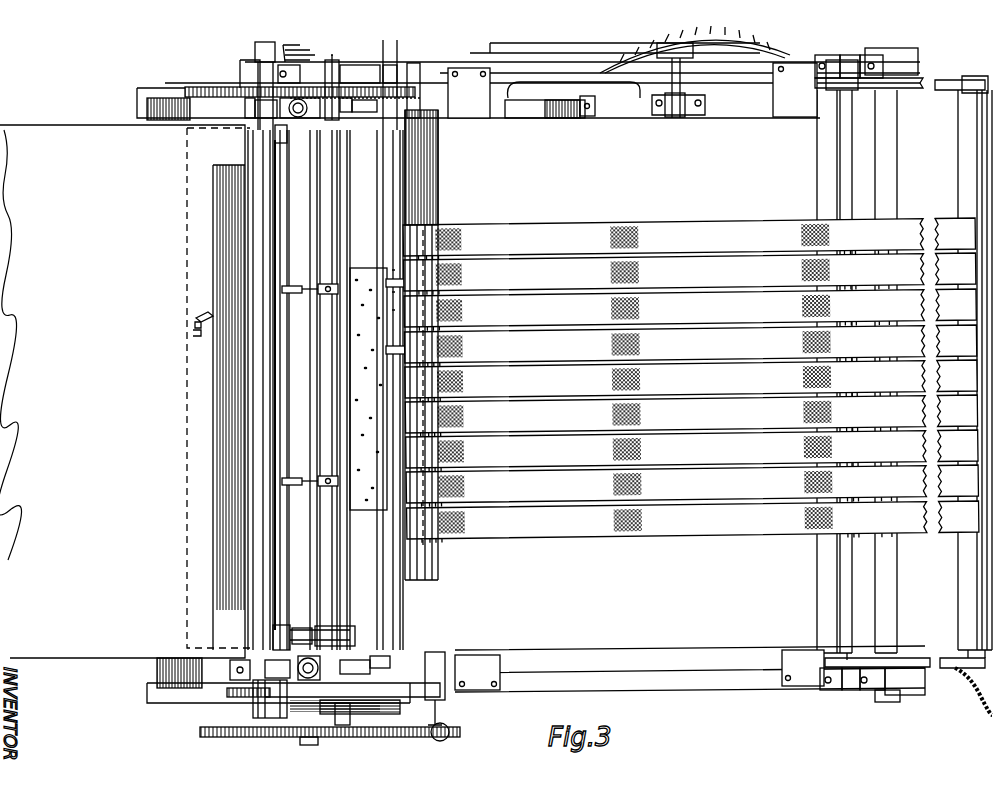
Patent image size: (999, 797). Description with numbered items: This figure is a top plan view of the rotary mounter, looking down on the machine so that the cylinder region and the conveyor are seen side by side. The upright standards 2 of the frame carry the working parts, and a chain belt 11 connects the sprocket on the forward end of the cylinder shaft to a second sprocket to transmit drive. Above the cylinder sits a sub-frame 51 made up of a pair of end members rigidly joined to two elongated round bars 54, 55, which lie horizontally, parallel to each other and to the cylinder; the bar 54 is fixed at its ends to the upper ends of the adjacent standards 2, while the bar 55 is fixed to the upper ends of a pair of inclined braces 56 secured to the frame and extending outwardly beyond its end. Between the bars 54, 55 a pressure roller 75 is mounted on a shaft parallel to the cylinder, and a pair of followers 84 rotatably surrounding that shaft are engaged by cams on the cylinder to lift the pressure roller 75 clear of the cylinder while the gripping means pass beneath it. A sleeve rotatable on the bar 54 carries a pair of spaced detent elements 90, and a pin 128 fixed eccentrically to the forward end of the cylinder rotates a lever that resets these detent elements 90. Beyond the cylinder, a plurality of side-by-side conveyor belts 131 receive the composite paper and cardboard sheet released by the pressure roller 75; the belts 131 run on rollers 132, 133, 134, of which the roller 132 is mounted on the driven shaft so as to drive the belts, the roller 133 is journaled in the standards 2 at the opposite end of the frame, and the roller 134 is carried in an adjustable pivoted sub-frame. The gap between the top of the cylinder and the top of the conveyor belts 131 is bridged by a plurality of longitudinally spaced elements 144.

The standards 2 is at (345, 72).
The chain belt 11 is at (215, 720).
The sub-frame 51 is at (225, 49).
The round bar 54 is at (332, 55).
The round bar 55 is at (270, 42).
The inclined braces 56 is at (288, 45).
The pressure roller 75 is at (275, 228).
The followers 84 is at (278, 143).
The detent elements 90 is at (300, 289).
The pin 128 is at (442, 642).
The conveyor belts 131 is at (702, 228).
The roller 132 is at (447, 565).
The roller 133 is at (826, 570).
The roller 134 is at (964, 570).
The elements 144 is at (402, 283).